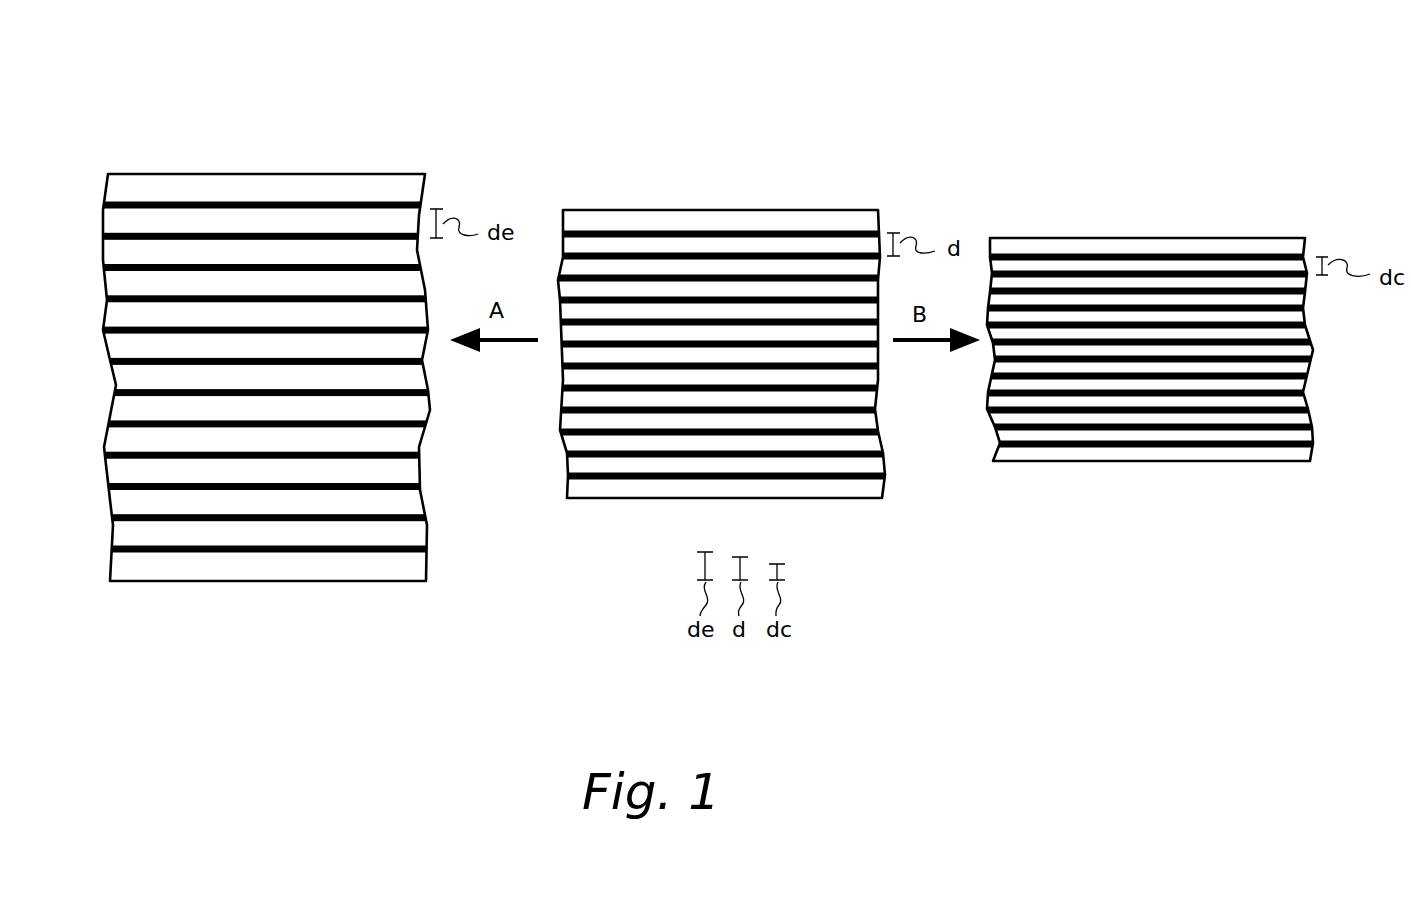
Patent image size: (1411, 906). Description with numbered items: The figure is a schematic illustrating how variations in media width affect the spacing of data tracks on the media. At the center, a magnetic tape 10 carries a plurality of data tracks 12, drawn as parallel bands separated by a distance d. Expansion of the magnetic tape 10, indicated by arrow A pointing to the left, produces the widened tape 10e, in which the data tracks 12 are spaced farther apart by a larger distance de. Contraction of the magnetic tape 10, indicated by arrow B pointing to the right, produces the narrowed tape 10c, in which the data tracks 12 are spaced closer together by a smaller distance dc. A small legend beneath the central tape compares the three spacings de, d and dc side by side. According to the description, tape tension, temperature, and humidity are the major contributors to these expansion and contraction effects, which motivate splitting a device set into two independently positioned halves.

The magnetic tape 10 is at (733, 208).
The expanded magnetic tape 10e is at (288, 172).
The contracted magnetic tape 10c is at (1115, 236).
The data tracks 12 is at (163, 268).